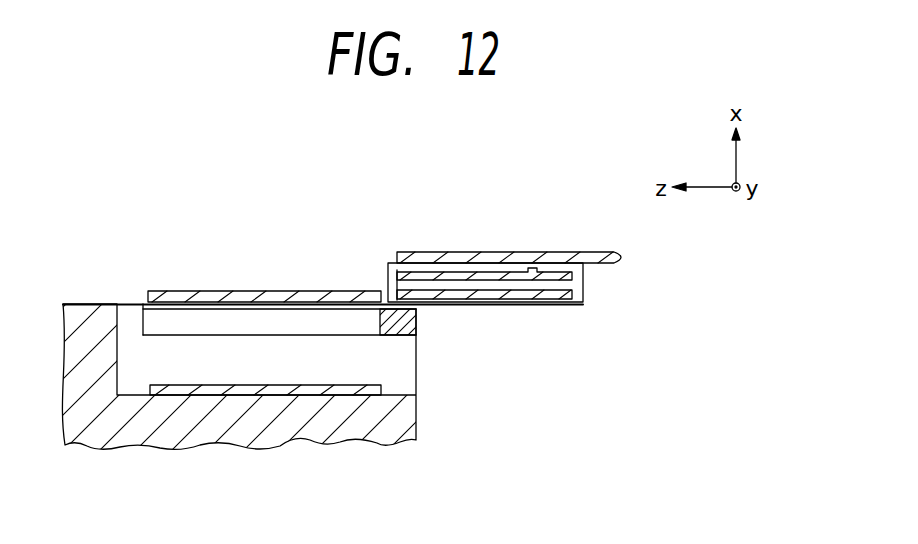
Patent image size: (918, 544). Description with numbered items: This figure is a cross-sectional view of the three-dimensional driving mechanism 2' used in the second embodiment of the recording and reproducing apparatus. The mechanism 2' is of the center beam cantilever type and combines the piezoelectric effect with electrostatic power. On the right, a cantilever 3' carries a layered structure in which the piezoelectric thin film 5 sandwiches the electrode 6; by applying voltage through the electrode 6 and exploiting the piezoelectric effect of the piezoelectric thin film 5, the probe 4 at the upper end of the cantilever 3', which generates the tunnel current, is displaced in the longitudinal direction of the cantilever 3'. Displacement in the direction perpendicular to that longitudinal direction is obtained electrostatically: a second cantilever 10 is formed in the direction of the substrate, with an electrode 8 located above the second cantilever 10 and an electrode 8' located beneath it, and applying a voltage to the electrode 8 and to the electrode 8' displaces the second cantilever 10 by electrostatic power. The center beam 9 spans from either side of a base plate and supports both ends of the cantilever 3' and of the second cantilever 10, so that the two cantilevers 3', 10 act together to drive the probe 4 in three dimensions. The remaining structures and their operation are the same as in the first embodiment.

The three-dimensional driving mechanism 2' is at (292, 354).
The cantilever 3' is at (501, 259).
The probe 4 is at (620, 253).
The piezoelectric thin film 5 is at (387, 267).
The electrode 6 is at (570, 280).
The electrode 8 is at (264, 279).
The electrode 8' is at (252, 441).
The center beam 9 is at (410, 322).
The second cantilever 10 is at (273, 330).